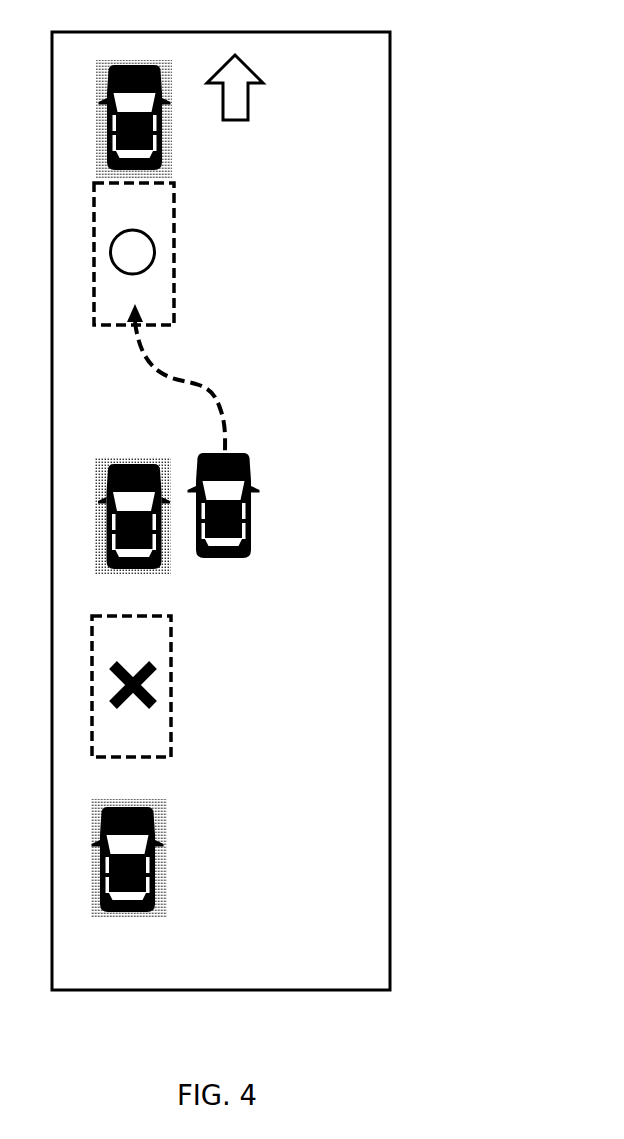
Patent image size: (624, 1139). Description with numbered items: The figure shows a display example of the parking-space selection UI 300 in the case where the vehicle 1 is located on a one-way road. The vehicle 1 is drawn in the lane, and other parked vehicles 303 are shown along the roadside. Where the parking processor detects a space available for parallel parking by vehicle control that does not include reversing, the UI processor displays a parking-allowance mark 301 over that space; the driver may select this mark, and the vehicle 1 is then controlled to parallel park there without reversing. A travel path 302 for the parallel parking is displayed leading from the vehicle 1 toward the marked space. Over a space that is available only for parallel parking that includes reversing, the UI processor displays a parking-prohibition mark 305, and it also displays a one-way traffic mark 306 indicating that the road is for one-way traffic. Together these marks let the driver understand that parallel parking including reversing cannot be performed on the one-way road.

The parking-space selection UI 300 is at (167, 32).
The parking-allowance mark 301 is at (155, 253).
The travel path 302 is at (223, 415).
The other parked vehicles 303 is at (122, 458).
The parking-prohibition mark 305 is at (153, 707).
The one-way traffic mark 306 is at (248, 108).
The vehicle 1 is at (256, 510).